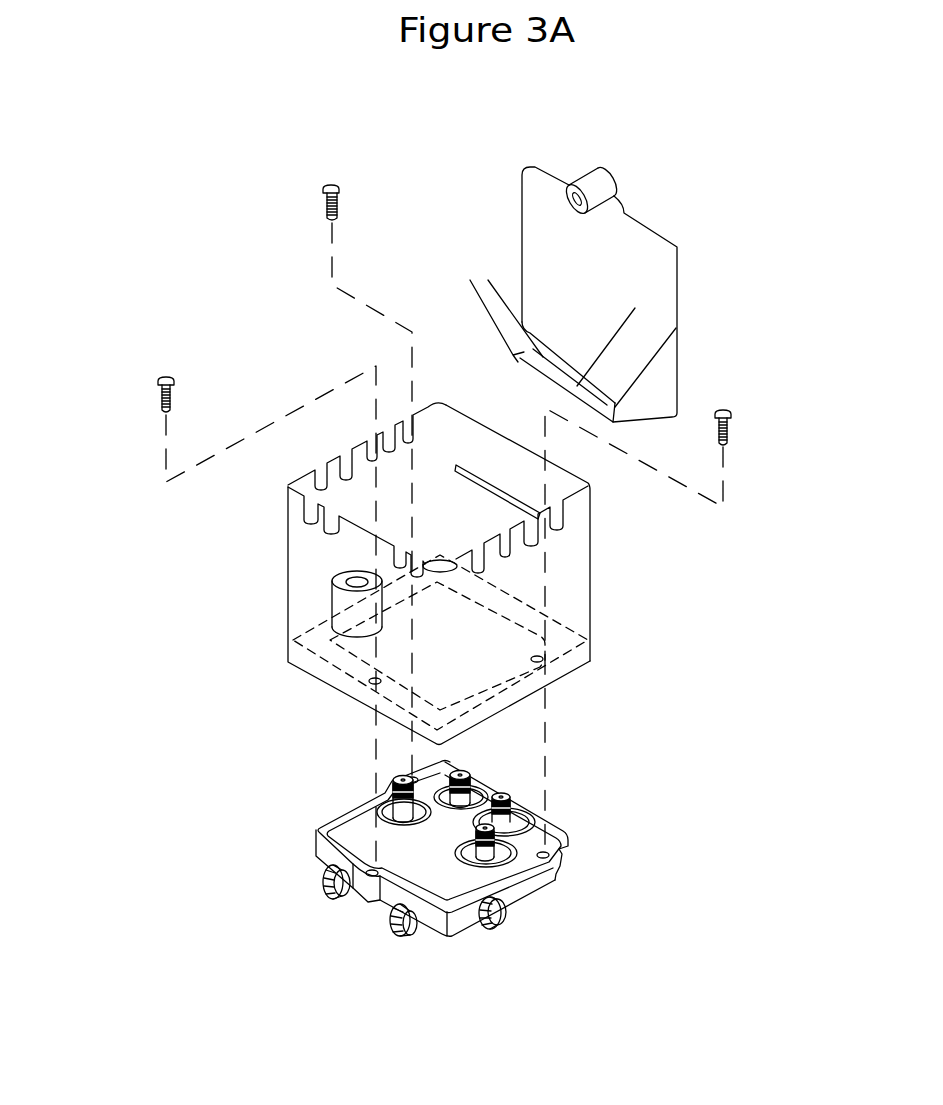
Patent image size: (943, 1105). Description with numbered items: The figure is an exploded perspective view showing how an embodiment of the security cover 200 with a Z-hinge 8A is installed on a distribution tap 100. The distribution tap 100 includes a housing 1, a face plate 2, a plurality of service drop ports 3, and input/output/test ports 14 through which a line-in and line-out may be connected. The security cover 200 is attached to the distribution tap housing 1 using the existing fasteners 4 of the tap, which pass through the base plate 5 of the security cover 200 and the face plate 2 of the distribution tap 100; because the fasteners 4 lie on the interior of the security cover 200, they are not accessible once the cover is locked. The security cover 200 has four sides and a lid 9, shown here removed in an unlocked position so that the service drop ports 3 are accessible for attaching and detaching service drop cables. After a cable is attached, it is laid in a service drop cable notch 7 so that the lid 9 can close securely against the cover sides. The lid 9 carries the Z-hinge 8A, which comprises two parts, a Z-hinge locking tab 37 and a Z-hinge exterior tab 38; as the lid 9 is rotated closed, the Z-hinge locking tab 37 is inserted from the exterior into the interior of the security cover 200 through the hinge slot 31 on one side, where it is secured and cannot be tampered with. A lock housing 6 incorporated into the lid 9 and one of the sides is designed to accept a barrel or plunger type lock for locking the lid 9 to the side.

The housing 1 is at (573, 848).
The face plate 2 is at (352, 829).
The service drop ports 3 is at (393, 778).
The fasteners 4 is at (323, 185).
The base plate 5 is at (471, 543).
The lock housing 6 is at (598, 180).
The service drop cable notch 7 is at (395, 432).
The Z-hinge 8A is at (488, 280).
The lid 9 is at (525, 166).
The input/output/test ports 14 is at (323, 887).
The hinge slot 31 is at (507, 487).
The Z-hinge locking tab 37 is at (635, 308).
The Z-hinge exterior tab 38 is at (677, 326).
The distribution tap 100 is at (527, 918).
The security cover 200 is at (315, 578).